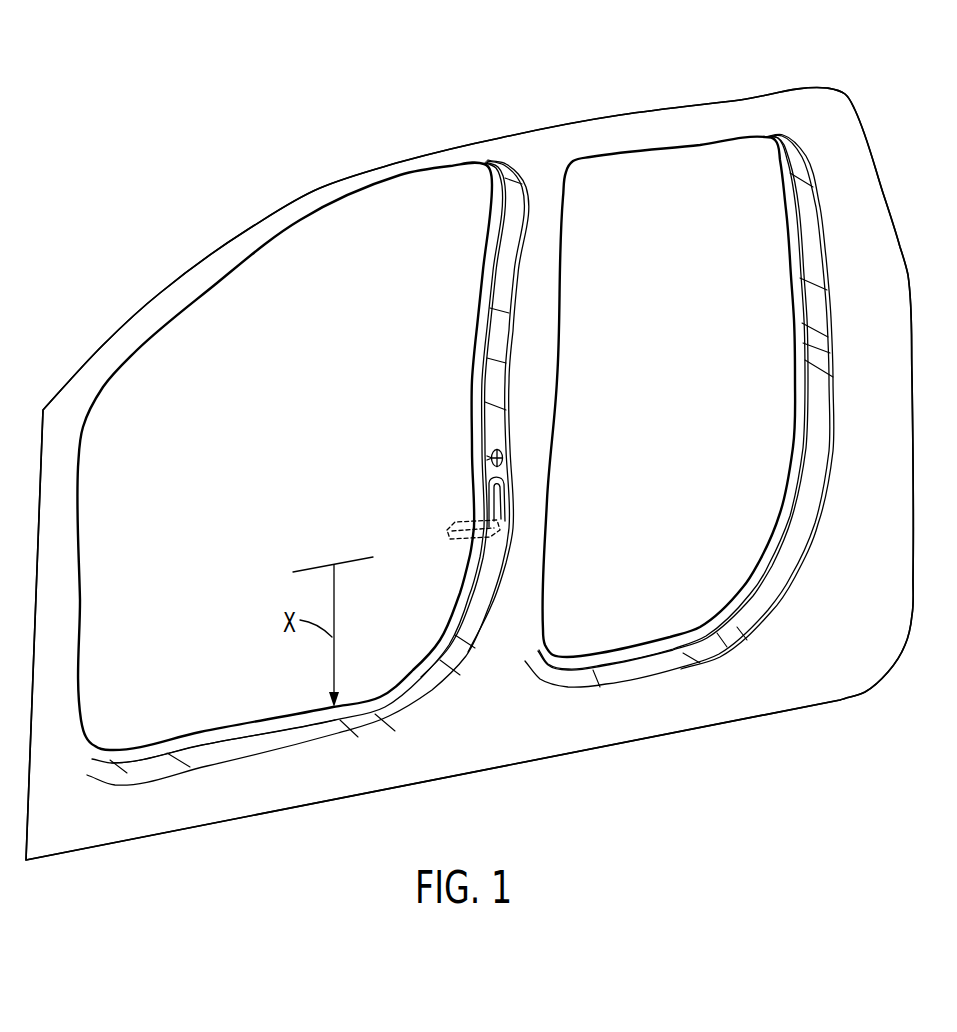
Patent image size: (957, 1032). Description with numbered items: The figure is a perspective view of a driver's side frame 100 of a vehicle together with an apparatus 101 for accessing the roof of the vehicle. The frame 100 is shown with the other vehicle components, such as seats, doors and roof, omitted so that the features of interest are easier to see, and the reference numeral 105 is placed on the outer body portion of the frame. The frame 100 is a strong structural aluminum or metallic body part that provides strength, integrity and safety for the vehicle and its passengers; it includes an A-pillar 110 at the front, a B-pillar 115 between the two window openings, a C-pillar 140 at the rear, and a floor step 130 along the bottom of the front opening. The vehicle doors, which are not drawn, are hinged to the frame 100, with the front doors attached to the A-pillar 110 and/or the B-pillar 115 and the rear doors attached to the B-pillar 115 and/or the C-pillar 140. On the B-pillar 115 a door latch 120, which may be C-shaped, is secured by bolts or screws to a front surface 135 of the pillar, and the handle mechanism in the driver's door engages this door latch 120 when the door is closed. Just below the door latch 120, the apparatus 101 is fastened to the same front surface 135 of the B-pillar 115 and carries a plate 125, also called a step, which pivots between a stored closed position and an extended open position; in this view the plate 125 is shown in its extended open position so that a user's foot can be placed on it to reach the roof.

The driver's side frame 100 is at (452, 118).
The door outer panel 105 is at (318, 188).
The A-pillar 110 is at (82, 612).
The B-pillar 115 is at (480, 333).
The front surface 135 is at (497, 397).
The floor step 130 is at (253, 745).
The door latch 120 is at (490, 457).
The apparatus 101 is at (497, 500).
The plate 125 is at (428, 529).
The C-pillar 140 is at (798, 233).